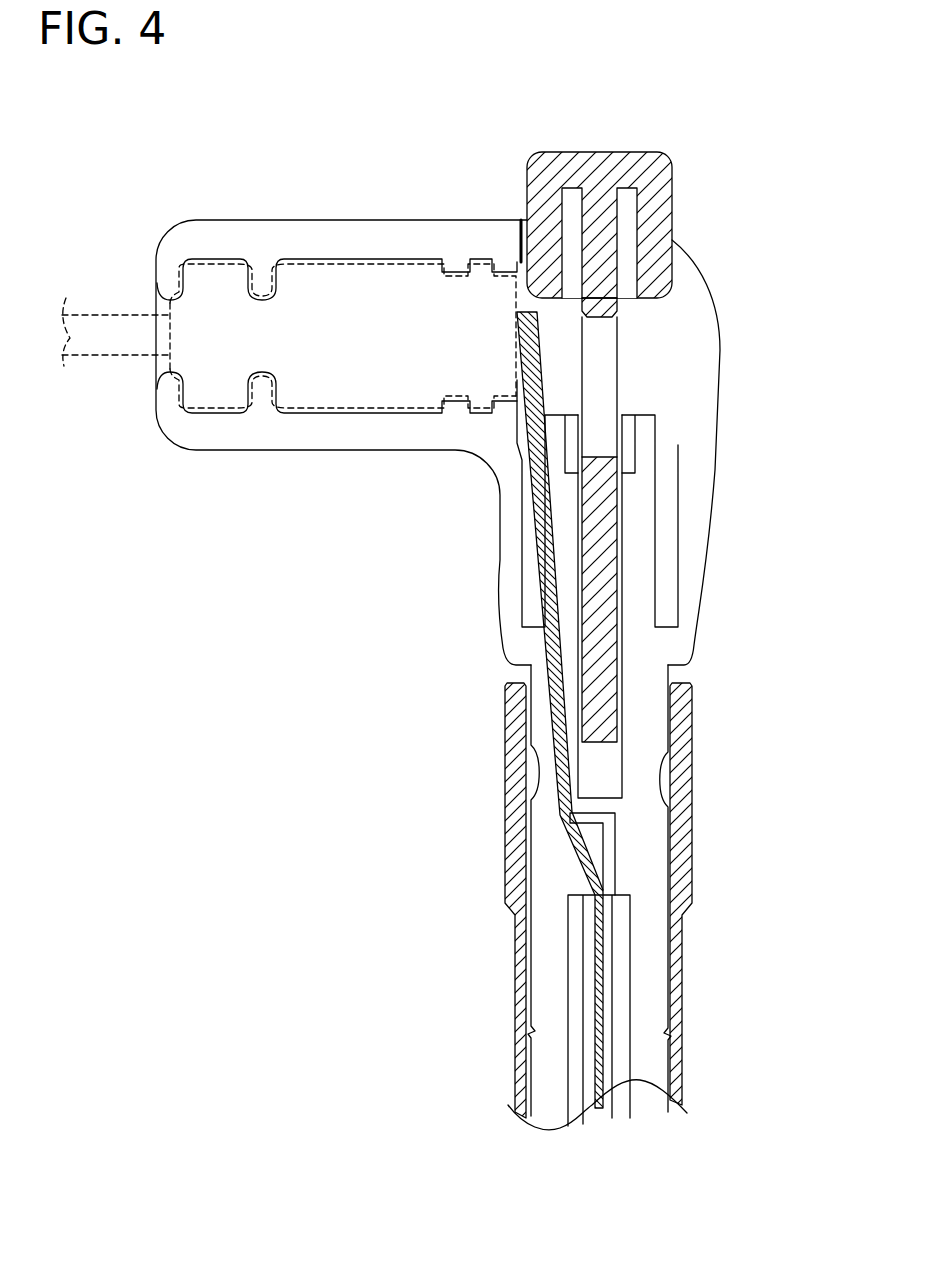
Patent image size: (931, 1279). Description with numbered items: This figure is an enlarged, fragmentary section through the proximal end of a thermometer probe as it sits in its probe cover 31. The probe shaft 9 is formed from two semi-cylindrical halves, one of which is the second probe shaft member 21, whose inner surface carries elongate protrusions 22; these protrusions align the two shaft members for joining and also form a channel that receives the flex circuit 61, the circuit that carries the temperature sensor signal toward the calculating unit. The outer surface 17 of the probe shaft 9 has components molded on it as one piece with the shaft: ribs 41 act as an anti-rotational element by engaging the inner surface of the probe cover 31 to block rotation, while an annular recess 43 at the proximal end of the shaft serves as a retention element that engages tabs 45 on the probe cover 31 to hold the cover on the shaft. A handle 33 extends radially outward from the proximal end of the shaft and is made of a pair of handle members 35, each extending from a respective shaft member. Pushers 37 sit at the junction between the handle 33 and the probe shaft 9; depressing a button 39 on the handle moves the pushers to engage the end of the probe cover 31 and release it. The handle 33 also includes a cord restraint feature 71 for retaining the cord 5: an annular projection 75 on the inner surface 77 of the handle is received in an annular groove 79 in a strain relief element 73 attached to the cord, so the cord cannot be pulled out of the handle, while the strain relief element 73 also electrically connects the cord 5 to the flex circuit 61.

The cord 5 is at (93, 328).
The probe shaft 9 is at (552, 993).
The outer surface 17 is at (668, 965).
The second probe shaft member 21 is at (548, 878).
The elongate protrusions 22 is at (573, 968).
The probe cover 31 is at (672, 1075).
The handle 33 is at (432, 220).
The handle members 35 is at (375, 237).
The pushers 37 is at (605, 655).
The button 39 is at (600, 192).
The ribs 41 is at (530, 1027).
The annular recess 43 is at (528, 785).
The tabs 45 is at (655, 770).
The flex circuit 61 is at (555, 708).
The cord restraint feature 71 is at (275, 298).
The strain relief element 73 is at (212, 380).
The annular projection 75 is at (260, 395).
The inner surface 77 is at (336, 402).
The annular groove 79 is at (258, 288).